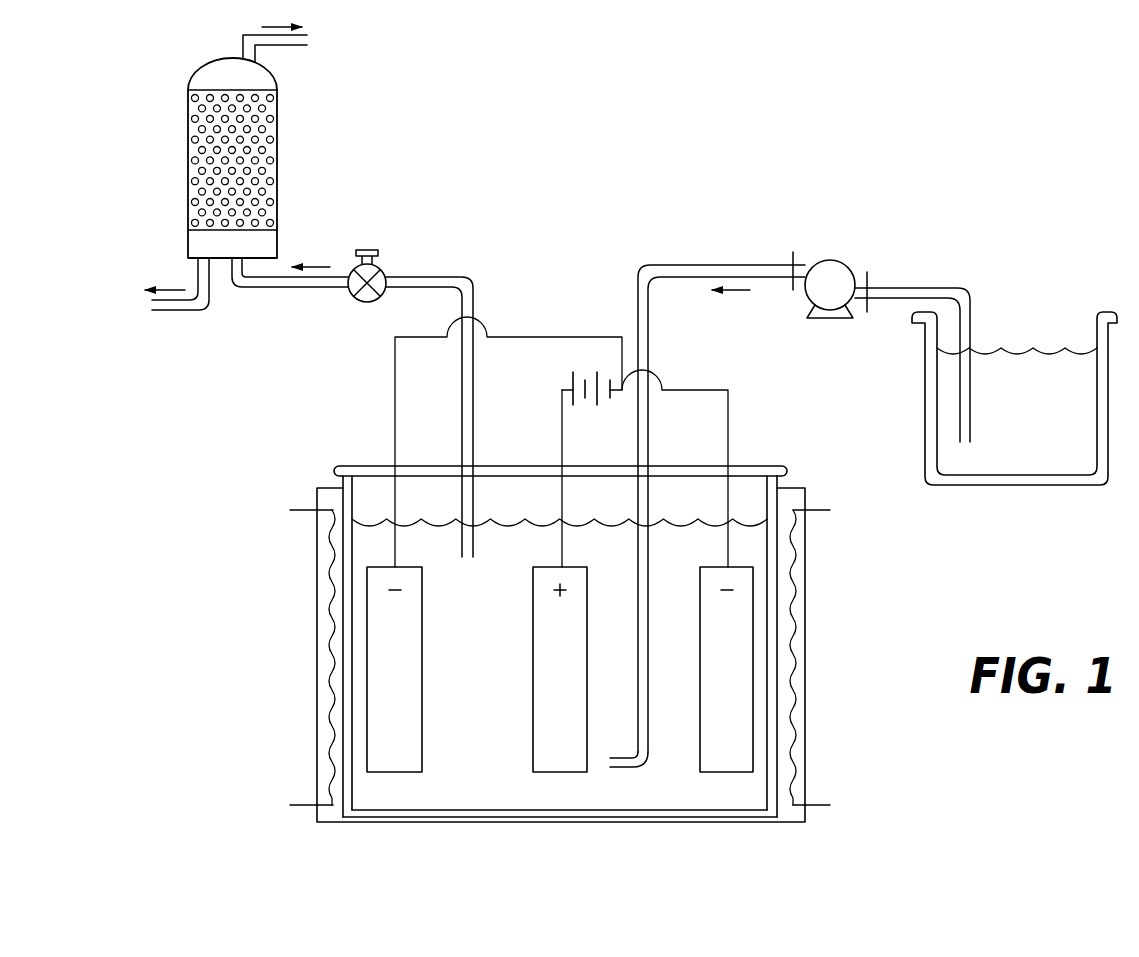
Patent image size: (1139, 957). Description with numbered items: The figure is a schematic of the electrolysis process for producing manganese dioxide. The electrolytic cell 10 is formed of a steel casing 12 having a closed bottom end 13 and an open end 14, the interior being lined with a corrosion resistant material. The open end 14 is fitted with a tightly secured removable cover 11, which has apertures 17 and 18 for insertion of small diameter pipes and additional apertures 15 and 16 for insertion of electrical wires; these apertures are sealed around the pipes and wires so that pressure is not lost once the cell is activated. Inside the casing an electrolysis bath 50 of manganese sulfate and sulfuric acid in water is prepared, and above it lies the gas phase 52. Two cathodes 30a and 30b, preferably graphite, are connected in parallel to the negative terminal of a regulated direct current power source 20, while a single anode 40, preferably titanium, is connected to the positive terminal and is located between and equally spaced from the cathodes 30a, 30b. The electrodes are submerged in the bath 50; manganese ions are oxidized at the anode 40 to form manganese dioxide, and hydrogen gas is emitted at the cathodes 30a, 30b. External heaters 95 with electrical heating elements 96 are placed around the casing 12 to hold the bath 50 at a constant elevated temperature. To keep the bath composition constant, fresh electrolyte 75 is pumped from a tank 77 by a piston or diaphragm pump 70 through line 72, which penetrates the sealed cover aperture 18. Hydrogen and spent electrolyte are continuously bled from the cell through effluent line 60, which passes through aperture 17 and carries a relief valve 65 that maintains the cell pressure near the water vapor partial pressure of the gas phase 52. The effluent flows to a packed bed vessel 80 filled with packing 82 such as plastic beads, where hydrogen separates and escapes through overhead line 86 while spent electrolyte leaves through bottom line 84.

The electrolytic cell 10 is at (220, 526).
The removable cover 11 is at (338, 465).
The steel casing 12 is at (355, 780).
The closed bottom end 13 is at (665, 822).
The open end 14 is at (750, 488).
The aperture 15 is at (560, 468).
The aperture 16 is at (378, 468).
The aperture 17 is at (472, 468).
The aperture 18 is at (650, 468).
The direct current power source 20 is at (585, 405).
The cathode 30a is at (425, 672).
The cathode 30b is at (713, 775).
The anode 40 is at (533, 665).
The electrolysis bath 50 is at (468, 780).
The gas phase 52 is at (425, 495).
The effluent line 60 is at (257, 290).
The relief valve 65 is at (385, 268).
The pump 70 is at (848, 262).
The line 72 is at (712, 265).
The fresh electrolyte 75 is at (987, 374).
The tank 77 is at (925, 415).
The packed bed vessel 80 is at (188, 118).
The packing 82 is at (263, 165).
The bottom line 84 is at (180, 312).
The overhead line 86 is at (288, 47).
The external heaters 95 is at (318, 617).
The electrical heating elements 96 is at (295, 510).